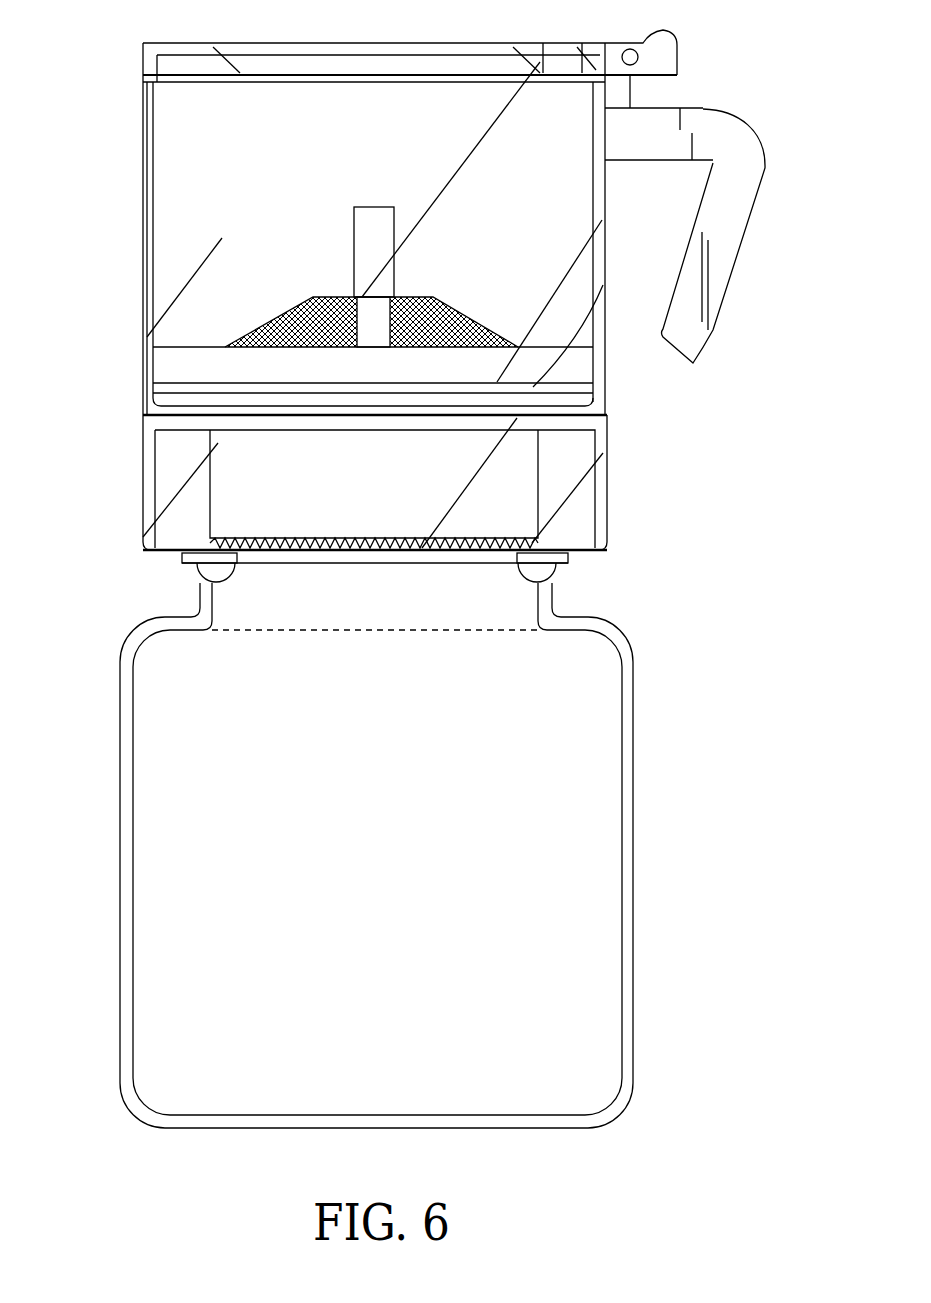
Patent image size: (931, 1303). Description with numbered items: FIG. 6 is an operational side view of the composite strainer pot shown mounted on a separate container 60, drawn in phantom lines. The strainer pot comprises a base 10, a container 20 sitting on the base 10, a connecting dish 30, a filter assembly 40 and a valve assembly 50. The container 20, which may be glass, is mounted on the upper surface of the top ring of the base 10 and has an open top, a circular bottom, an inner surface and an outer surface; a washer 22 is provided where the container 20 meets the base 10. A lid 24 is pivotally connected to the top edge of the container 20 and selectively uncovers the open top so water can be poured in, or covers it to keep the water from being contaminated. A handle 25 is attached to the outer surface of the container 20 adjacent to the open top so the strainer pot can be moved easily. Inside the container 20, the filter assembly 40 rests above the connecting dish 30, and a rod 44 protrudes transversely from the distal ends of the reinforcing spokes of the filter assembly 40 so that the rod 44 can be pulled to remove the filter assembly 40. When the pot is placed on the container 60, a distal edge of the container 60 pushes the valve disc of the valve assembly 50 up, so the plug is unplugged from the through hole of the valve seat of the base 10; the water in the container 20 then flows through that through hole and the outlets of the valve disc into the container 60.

The base 10 is at (167, 483).
The container 20 is at (160, 177).
The washer 22 is at (607, 418).
The lid 24 is at (405, 48).
The handle 25 is at (725, 180).
The connecting dish 30 is at (603, 285).
The filter assembly 40 is at (468, 297).
The rod 44 is at (367, 240).
The valve assembly 50 is at (327, 560).
The container (cup) 60 is at (582, 817).